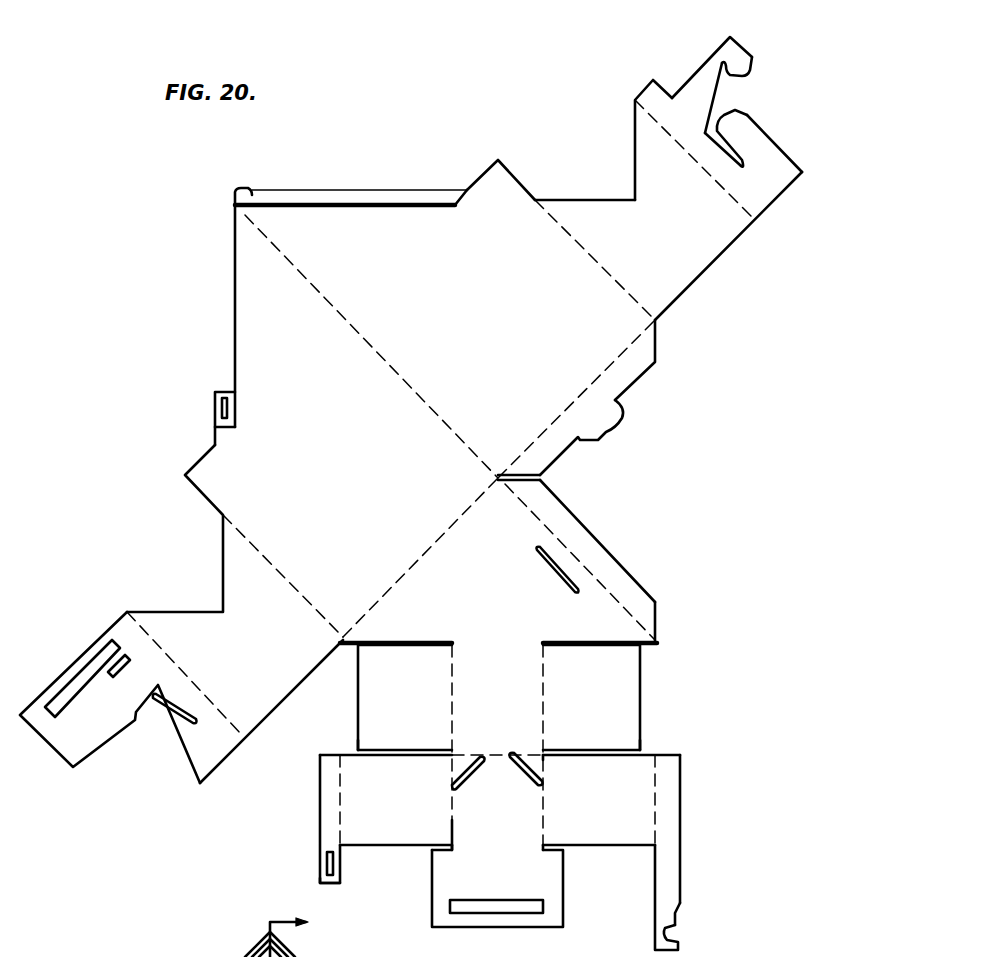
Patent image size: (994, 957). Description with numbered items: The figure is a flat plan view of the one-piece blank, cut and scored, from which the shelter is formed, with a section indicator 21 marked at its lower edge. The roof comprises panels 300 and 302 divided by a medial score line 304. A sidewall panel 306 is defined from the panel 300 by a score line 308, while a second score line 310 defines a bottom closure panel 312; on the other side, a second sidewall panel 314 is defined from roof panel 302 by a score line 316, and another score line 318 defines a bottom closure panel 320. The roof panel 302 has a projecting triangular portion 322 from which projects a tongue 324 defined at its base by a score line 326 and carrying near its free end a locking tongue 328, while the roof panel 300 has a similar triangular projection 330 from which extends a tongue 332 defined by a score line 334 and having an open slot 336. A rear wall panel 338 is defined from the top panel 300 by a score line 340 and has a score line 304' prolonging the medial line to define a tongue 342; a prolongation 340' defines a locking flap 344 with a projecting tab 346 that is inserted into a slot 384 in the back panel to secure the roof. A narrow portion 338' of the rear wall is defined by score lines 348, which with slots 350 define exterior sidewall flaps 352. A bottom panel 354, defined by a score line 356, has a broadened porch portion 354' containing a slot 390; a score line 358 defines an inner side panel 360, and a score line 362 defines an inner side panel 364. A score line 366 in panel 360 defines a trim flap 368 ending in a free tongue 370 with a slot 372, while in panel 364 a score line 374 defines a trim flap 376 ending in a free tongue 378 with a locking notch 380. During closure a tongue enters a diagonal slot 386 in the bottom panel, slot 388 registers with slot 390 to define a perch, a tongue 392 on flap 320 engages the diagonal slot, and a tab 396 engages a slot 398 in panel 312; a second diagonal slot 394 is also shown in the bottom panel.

The section line indicator 21 is at (273, 937).
The roof panel 300 is at (362, 424).
The roof panel 302 is at (500, 338).
The medial score line 304 is at (371, 346).
The score line 304' is at (580, 562).
The sidewall panel 306 is at (290, 666).
The score line 308 is at (285, 575).
The score line 310 is at (210, 668).
The bottom closure panel 312 is at (110, 722).
The sidewall panel 314 is at (664, 242).
The score line 316 is at (612, 283).
The score line 318 is at (705, 178).
The bottom closure panel 320 is at (698, 128).
The triangular portion 322 is at (505, 176).
The tongue 324 is at (340, 200).
The score line 326 is at (458, 202).
The locking tongue 328 is at (258, 200).
The triangular projection 330 is at (197, 472).
The tongue 332 is at (213, 425).
The score line 334 is at (232, 432).
The open slot 336 is at (226, 392).
The rear wall panel 338 is at (560, 603).
The narrow portion 338' is at (497, 745).
The score line 340 is at (420, 557).
The prolongation of score line 340' is at (576, 399).
The tongue 342 is at (596, 544).
The locking flap 344 is at (650, 367).
The projecting tab 346 is at (620, 430).
The score lines 348 is at (450, 672).
The slots 350 is at (410, 636).
The exterior sidewall flaps 352 is at (421, 704).
The bottom panel 354 is at (497, 833).
The porch portion 354' is at (497, 888).
The score line 356 is at (497, 753).
The score line 358 is at (452, 827).
The inner side panel 360 is at (406, 811).
The score line 362 is at (545, 775).
The inner side panel 364 is at (613, 814).
The score line 366 is at (338, 786).
The trim flap 368 is at (322, 798).
The free tongue 370 is at (332, 886).
The slot 372 is at (327, 863).
The score line 374 is at (652, 821).
The trim flap 376 is at (680, 805).
The free tongue 378 is at (676, 907).
The locking notch 380 is at (680, 936).
The slot 384 is at (553, 573).
The diagonal slot 386 is at (462, 780).
The slot 388 is at (85, 668).
The slot 390 is at (497, 914).
The tongue 392 is at (758, 128).
The slot 394 is at (526, 780).
The tab 396 is at (752, 55).
The slot 398 is at (112, 672).